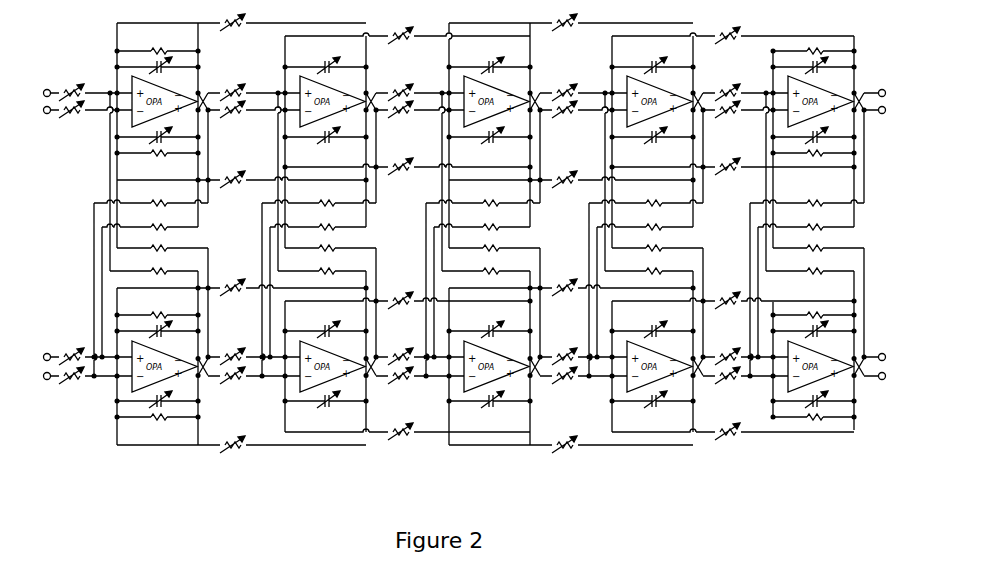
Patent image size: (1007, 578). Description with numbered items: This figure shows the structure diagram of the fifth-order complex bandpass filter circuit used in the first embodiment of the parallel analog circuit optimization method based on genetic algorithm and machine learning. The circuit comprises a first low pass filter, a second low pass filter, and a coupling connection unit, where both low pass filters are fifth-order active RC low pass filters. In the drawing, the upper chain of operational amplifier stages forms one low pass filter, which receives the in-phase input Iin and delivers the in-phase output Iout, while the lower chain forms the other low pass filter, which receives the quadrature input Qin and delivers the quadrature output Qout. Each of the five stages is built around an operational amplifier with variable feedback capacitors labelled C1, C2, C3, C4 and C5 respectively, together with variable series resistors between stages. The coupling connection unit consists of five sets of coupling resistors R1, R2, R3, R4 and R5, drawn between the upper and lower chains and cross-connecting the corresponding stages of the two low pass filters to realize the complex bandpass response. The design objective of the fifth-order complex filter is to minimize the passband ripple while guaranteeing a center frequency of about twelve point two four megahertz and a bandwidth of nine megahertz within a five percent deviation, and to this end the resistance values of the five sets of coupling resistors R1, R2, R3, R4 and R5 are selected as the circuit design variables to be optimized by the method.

The variable capacitor C1 is at (169, 237).
The variable capacitor C2 is at (337, 237).
The variable capacitor C3 is at (501, 237).
The variable capacitor C4 is at (664, 237).
The variable capacitor C5 is at (825, 237).
The coupling resistors R1 is at (150, 231).
The coupling resistors R2 is at (318, 231).
The coupling resistors R3 is at (482, 231).
The coupling resistors R4 is at (645, 231).
The coupling resistors R5 is at (806, 231).
The in-phase input Iin is at (32, 99).
The quadrature input Qin is at (29, 365).
The in-phase output Iout is at (905, 99).
The quadrature output Qout is at (909, 365).